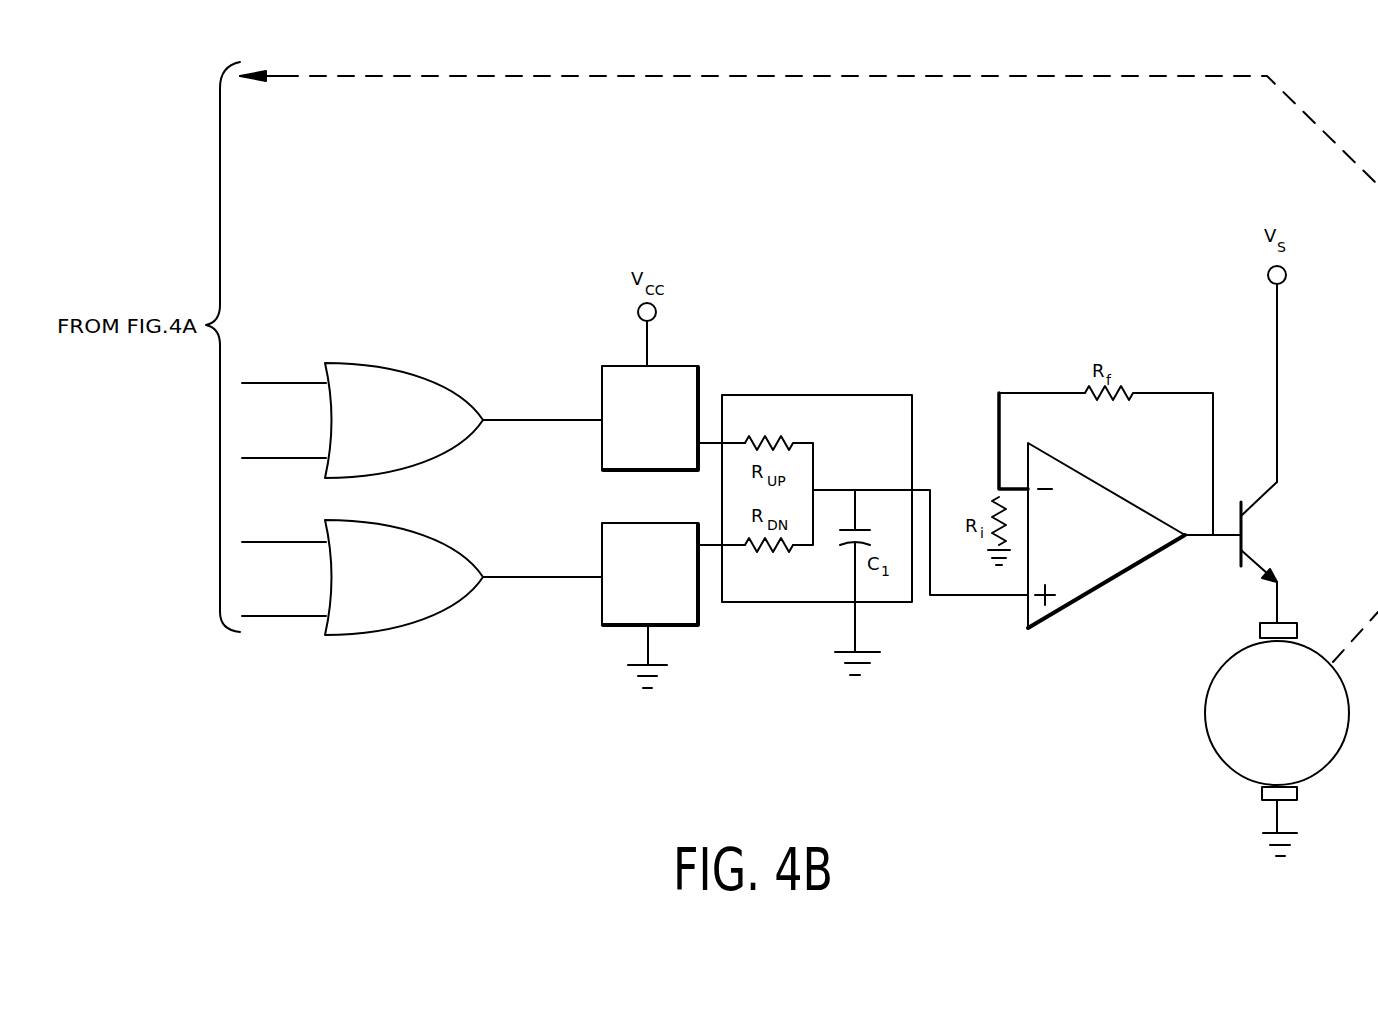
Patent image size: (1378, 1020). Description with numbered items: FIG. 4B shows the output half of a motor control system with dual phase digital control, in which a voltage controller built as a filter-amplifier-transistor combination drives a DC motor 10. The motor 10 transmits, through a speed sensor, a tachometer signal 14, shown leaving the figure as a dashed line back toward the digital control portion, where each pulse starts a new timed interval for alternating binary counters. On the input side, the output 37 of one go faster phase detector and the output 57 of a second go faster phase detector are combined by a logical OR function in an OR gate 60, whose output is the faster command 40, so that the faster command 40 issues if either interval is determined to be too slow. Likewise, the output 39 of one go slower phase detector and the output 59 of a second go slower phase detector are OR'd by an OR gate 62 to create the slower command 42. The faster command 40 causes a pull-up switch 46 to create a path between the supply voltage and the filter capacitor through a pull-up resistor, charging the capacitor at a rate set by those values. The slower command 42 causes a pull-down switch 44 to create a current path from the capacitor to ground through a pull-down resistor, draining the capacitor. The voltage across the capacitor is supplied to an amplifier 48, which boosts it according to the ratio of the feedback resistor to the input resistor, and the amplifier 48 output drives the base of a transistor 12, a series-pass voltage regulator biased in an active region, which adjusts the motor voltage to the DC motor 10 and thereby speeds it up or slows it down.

The tachometer signal 14 is at (404, 78).
The output of the go faster phase detector 37 is at (283, 383).
The output of the go faster phase detector 57 is at (283, 458).
The output of the go slower phase detector 39 is at (285, 542).
The output of the go slower phase detector 59 is at (285, 616).
The OR gate 60 is at (406, 435).
The OR gate 62 is at (406, 592).
The faster command 40 is at (524, 424).
The slower command 42 is at (532, 580).
The pull-up switch 46 is at (656, 472).
The pull-down switch 44 is at (656, 627).
The amplifier 48 is at (1104, 584).
The transistor 12 is at (1246, 538).
The DC motor 10 is at (1320, 772).